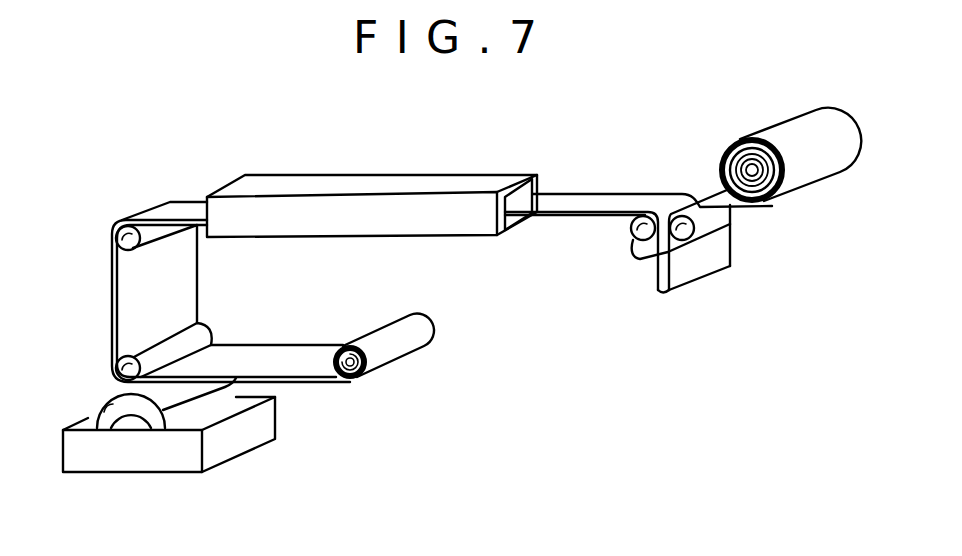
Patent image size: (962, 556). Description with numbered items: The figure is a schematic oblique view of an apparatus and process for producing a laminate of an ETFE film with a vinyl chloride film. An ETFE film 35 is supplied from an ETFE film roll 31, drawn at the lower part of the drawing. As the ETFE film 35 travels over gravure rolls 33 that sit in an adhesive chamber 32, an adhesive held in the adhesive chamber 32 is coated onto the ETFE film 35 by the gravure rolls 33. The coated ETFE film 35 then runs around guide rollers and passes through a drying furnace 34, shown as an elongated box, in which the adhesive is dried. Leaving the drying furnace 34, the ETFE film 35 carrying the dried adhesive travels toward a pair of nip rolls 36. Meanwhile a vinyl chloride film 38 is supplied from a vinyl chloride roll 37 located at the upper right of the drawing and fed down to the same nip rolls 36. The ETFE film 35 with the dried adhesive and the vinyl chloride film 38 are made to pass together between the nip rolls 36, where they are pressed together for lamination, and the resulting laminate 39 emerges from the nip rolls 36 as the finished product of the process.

The ETFE film roll 31 is at (385, 350).
The adhesive chamber 32 is at (177, 454).
The gravure rolls 33 is at (115, 382).
The drying furnace 34 is at (463, 186).
The ETFE film 35 is at (111, 279).
The nip rolls 36 is at (643, 261).
The vinyl chloride roll 37 is at (788, 128).
The vinyl chloride film 38 is at (733, 228).
The laminate 39 is at (688, 266).